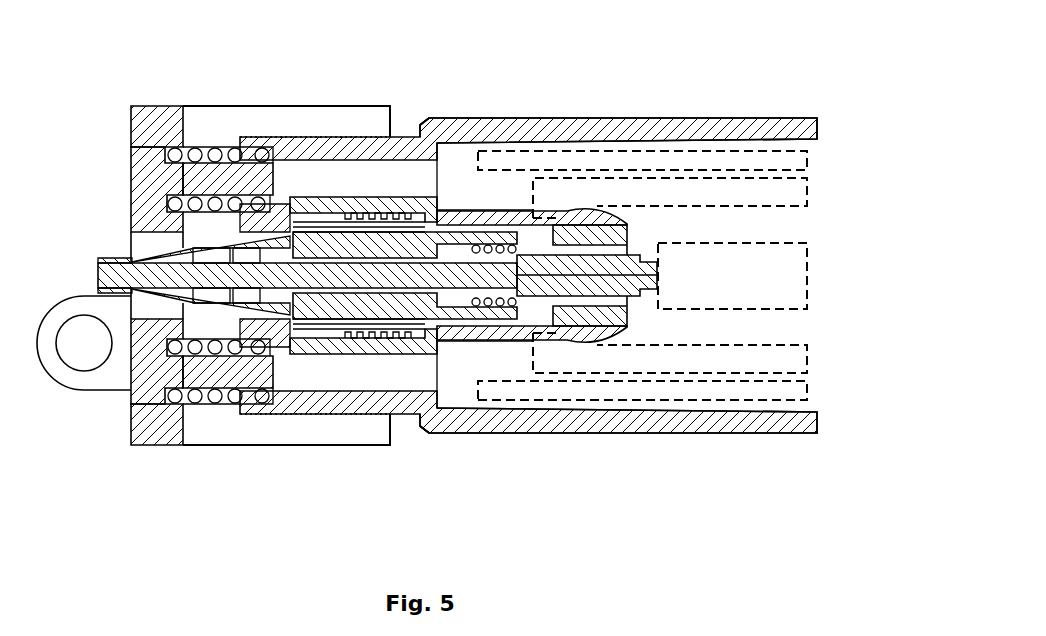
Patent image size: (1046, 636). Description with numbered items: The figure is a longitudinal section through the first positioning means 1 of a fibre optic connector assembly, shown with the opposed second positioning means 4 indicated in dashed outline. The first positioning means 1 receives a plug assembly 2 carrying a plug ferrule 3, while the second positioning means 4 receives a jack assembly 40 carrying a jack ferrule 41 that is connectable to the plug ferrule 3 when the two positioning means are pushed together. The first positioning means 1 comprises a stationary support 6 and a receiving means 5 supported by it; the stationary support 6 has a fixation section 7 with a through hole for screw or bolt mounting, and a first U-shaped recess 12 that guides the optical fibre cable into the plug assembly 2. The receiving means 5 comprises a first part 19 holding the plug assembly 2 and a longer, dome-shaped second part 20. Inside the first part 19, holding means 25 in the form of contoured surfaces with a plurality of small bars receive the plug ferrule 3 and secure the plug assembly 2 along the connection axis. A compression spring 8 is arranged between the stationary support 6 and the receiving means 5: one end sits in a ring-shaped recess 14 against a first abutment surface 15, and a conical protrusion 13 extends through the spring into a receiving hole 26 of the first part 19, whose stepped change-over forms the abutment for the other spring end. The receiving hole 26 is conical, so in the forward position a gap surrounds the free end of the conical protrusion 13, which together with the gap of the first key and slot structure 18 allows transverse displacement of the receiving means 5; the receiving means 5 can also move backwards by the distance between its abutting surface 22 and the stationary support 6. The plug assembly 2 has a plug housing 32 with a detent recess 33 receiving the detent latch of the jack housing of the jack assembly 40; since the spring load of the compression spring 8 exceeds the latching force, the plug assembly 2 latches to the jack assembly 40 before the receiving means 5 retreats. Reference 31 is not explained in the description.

The first positioning means 1 is at (108, 98).
The plug assembly 2 is at (515, 345).
The plug ferrule 3 is at (649, 239).
The second positioning means 4 is at (808, 156).
The receiving means 5 is at (583, 100).
The stationary support 6 is at (213, 84).
The fixation section 7 is at (60, 380).
The compression spring 8 is at (243, 158).
The first U-shaped recess 12 is at (128, 242).
The conical protrusion 13 is at (222, 175).
The ring-shaped recess 14 is at (177, 405).
The first abutment surface 15 is at (162, 118).
The first key and slot structure 18 is at (358, 102).
The first part 19 is at (395, 130).
The second part 20 is at (660, 126).
The abutting surface 22 is at (243, 410).
The holding means 25 is at (385, 210).
The receiving hole 26 is at (305, 168).
The stop ring 31 is at (262, 408).
The plug housing 32 is at (572, 216).
The detent recess 33 is at (545, 215).
The jack assembly 40 is at (808, 197).
The jack ferrule 41 is at (808, 280).